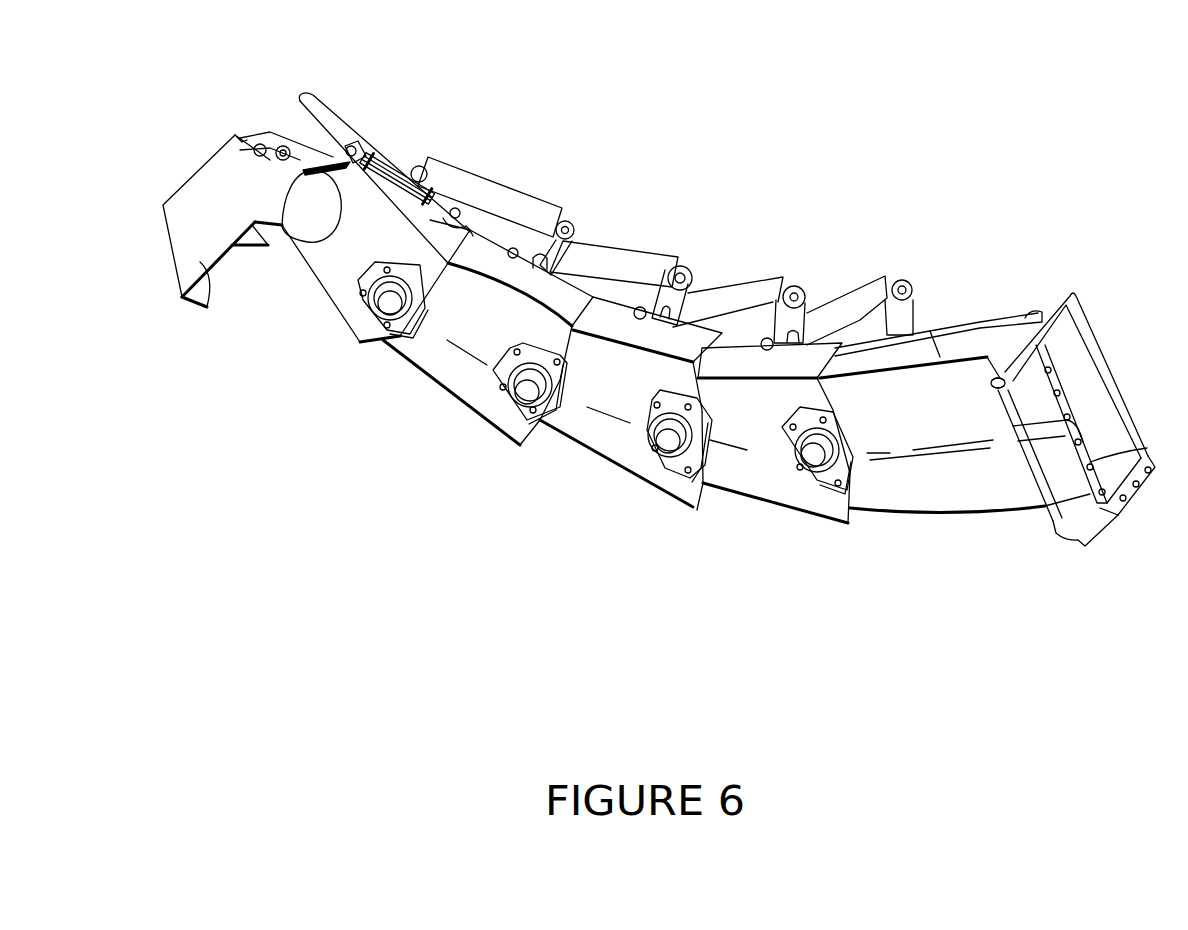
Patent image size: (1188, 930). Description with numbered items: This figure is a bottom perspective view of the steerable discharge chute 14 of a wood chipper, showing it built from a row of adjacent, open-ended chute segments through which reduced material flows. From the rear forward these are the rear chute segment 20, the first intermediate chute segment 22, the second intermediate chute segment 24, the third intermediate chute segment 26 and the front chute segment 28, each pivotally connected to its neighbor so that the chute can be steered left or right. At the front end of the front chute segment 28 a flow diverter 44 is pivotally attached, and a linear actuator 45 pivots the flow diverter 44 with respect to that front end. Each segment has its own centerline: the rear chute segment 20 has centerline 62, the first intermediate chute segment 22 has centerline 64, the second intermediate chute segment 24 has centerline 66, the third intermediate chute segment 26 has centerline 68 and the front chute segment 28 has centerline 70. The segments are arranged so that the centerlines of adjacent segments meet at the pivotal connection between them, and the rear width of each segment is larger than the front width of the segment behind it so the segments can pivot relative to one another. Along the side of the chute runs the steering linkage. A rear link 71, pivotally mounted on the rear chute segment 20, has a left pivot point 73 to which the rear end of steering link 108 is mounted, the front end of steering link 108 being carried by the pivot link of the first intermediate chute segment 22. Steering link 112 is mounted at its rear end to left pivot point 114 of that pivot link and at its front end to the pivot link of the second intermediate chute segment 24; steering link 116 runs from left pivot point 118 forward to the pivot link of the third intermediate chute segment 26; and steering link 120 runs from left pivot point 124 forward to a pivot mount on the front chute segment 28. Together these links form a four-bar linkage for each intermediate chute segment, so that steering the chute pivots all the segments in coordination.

The discharge chute 14 is at (966, 168).
The rear chute segment 20 is at (987, 442).
The first intermediate chute segment 22 is at (794, 467).
The second intermediate chute segment 24 is at (631, 433).
The third intermediate chute segment 26 is at (488, 359).
The front chute segment 28 is at (351, 307).
The flow diverter 44 is at (190, 240).
The linear actuator 45 is at (403, 165).
The centerline 62 is at (918, 452).
The centerline 64 is at (736, 440).
The centerline 66 is at (565, 388).
The centerline 68 is at (428, 327).
The centerline 70 is at (333, 246).
The rear link 71 is at (907, 322).
The left pivot point 73 is at (918, 277).
The steering link 108 is at (863, 297).
The steering link 112 is at (737, 300).
The left pivot point 114 is at (795, 277).
The steering link 116 is at (630, 267).
The left pivot point 118 is at (693, 258).
The steering link 120 is at (497, 193).
The left pivot point 124 is at (580, 212).